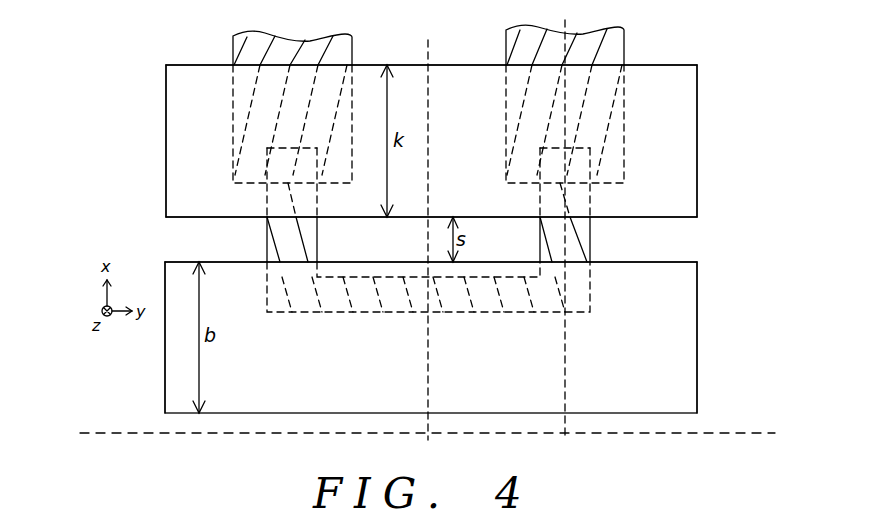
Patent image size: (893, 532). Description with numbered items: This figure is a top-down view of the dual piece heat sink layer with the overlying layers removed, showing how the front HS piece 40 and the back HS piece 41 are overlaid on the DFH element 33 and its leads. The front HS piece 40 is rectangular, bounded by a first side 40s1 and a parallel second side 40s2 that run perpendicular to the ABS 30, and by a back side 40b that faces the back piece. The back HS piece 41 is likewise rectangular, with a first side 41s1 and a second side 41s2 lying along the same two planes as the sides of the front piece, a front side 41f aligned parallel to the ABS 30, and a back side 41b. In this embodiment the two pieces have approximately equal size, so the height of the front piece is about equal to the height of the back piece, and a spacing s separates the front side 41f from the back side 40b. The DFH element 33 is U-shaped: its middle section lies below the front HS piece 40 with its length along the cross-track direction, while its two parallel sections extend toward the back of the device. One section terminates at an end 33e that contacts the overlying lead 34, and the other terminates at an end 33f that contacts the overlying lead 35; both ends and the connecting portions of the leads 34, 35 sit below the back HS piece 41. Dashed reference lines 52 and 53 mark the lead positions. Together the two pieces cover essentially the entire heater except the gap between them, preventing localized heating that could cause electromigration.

The ABS 30 is at (428, 433).
The DFH element 33 is at (278, 243).
The end of DFH element 33e is at (295, 148).
The end of DFH element 33f is at (570, 145).
The lead 34 is at (240, 42).
The lead 35 is at (617, 37).
The front HS piece 40 is at (688, 327).
The back side of front piece 40b is at (688, 262).
The first side of front piece 40s1 is at (165, 366).
The second side of front piece 40s2 is at (697, 366).
The back HS piece 41 is at (683, 120).
The back side of back piece 41b is at (668, 65).
The front side of back piece 41f is at (688, 217).
The first side of back piece 41s1 is at (166, 163).
The second side of back piece 41s2 is at (697, 160).
The center line of first component 52 is at (427, 240).
The center line of second component 53 is at (564, 232).